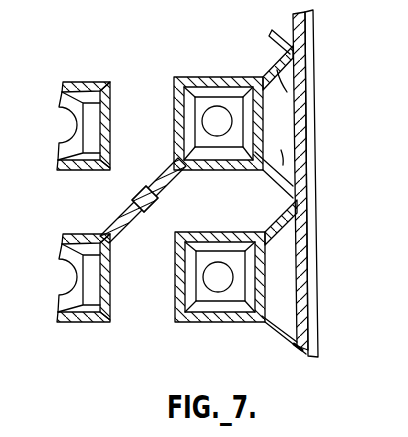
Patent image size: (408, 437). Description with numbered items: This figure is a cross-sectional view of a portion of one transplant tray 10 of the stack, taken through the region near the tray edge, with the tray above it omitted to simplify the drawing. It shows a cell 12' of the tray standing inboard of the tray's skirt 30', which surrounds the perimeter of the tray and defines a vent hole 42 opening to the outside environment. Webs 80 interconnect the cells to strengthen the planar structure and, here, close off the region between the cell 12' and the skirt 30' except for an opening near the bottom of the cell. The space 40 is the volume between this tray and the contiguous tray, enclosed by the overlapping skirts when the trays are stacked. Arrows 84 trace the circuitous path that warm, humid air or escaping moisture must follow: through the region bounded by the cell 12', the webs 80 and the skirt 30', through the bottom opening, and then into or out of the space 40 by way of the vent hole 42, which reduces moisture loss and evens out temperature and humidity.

The tray 10 is at (334, 323).
The cell 12' is at (205, 111).
The skirt 30' is at (327, 183).
The space 40 is at (209, 218).
The vent hole 42 is at (284, 131).
The web 80 is at (272, 58).
The arrow 84 is at (256, 61).